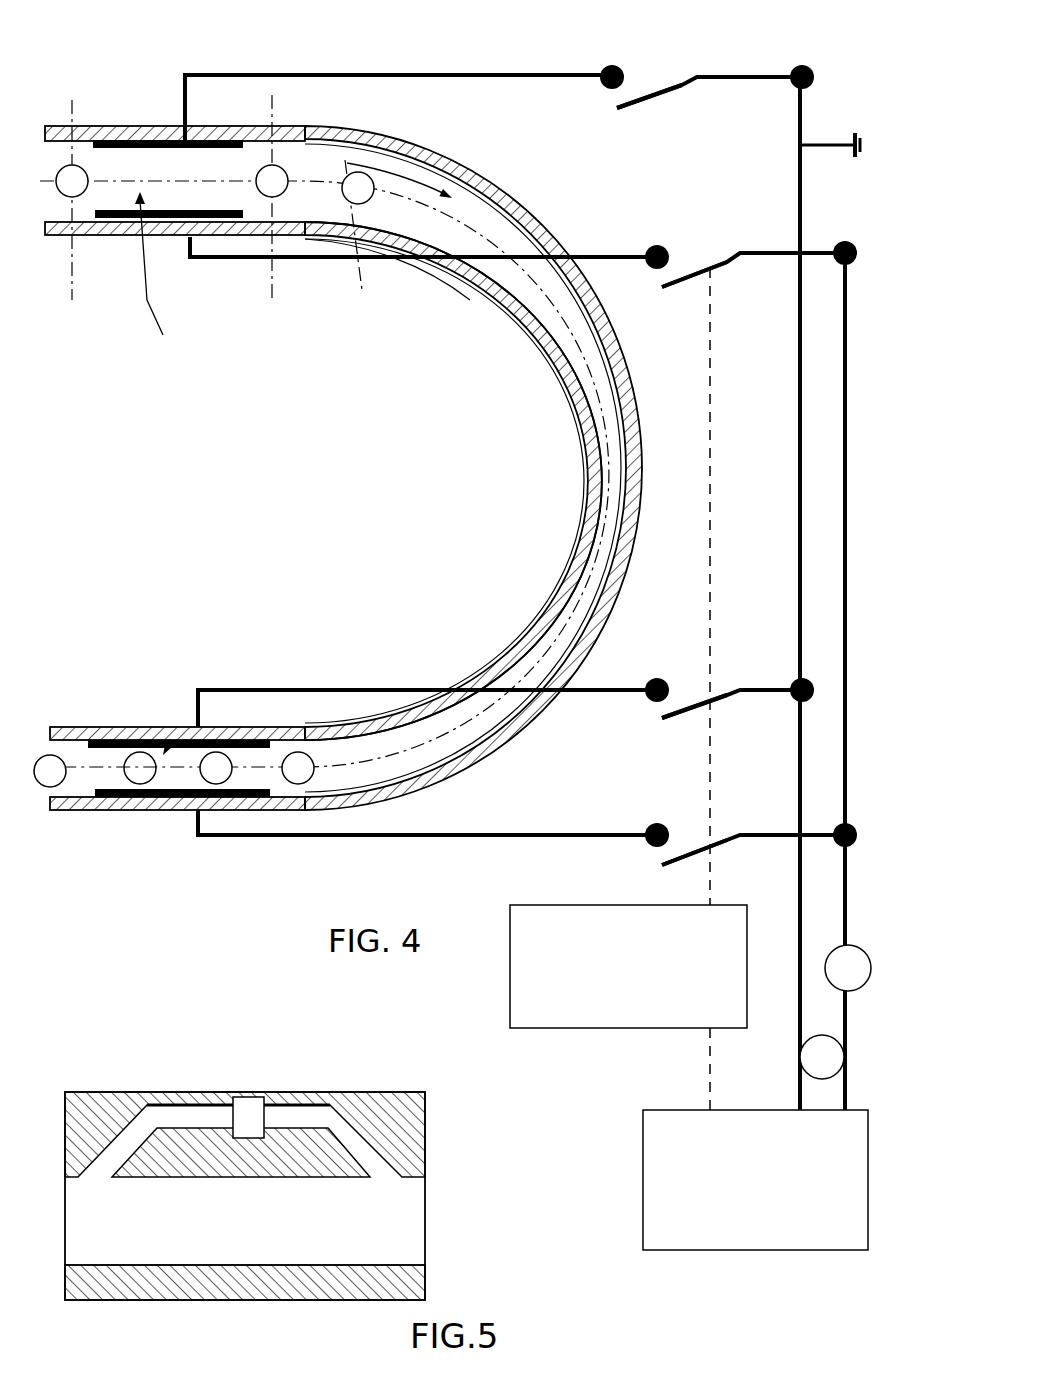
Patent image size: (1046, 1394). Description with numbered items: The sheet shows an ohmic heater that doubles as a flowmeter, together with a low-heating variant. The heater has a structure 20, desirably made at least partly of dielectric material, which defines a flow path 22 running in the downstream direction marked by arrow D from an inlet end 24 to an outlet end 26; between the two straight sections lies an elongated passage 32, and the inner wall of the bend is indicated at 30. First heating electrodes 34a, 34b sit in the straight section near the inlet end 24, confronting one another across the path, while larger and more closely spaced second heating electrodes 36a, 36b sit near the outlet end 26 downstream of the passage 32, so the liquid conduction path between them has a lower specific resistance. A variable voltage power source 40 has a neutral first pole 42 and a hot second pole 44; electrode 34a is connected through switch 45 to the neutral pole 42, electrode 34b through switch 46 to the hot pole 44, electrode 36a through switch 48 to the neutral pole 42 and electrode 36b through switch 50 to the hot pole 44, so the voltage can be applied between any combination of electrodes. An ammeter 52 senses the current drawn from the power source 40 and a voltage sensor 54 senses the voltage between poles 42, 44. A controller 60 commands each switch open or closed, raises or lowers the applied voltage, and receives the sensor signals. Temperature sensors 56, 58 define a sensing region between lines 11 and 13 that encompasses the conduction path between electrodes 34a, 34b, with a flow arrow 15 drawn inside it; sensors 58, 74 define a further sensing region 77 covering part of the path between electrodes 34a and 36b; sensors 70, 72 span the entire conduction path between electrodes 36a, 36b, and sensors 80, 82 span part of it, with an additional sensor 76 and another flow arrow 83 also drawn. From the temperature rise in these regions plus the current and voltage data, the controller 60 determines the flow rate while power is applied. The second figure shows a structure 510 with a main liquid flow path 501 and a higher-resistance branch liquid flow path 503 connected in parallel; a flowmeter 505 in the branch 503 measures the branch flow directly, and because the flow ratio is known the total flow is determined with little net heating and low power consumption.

In FIG. 4, the structure 20 is at (453, 148).
In FIG. 4, the flow path 22 is at (310, 160).
In FIG. 4, the inlet end 24 is at (52, 128).
In FIG. 4, the outlet end 26 is at (57, 727).
In FIG. 4, the line 11 is at (64, 240).
In FIG. 4, the line 13 is at (263, 280).
In FIG. 4, the flow direction 15 is at (134, 227).
In FIG. 4, the bend inner wall 30 is at (558, 362).
In FIG. 4, the elongated passage 32 is at (548, 326).
In FIG. 4, the electrode 34a is at (145, 140).
In FIG. 4, the electrode 34b is at (190, 235).
In FIG. 4, the electrode 36a is at (170, 735).
In FIG. 4, the electrode 36b is at (147, 800).
In FIG. 4, the variable voltage power source 40 is at (645, 1172).
In FIG. 4, the first pole 42 is at (800, 1028).
In FIG. 4, the second pole 44 is at (850, 1092).
In FIG. 4, the switch 45 is at (683, 84).
In FIG. 4, the switch 46 is at (716, 262).
In FIG. 4, the switch 48 is at (722, 693).
In FIG. 4, the switch 50 is at (727, 840).
In FIG. 4, the ammeter 52 is at (862, 950).
In FIG. 4, the voltage sensor 54 is at (843, 1068).
In FIG. 4, the temperature sensor 56 is at (62, 195).
In FIG. 4, the temperature sensor 58 is at (273, 165).
In FIG. 4, the controller 60 is at (530, 1020).
In FIG. 4, the temperature sensor 70 is at (43, 755).
In FIG. 4, the temperature sensor 72 is at (303, 752).
In FIG. 4, the temperature sensor 74 is at (410, 250).
In FIG. 4, the temperature sensor 76 is at (365, 205).
In FIG. 4, the sensing region 77 is at (360, 297).
In FIG. 4, the temperature sensor 80 is at (223, 780).
In FIG. 4, the temperature sensor 82 is at (127, 780).
In FIG. 4, the flow direction 83 is at (163, 727).
In FIG. 4, the arrow D is at (393, 175).
In FIG. 5, the main liquid flow path 501 is at (265, 1217).
In FIG. 5, the branch liquid flow path 503 is at (178, 1113).
In FIG. 5, the flowmeter 505 is at (258, 1120).
In FIG. 5, the structure 510 is at (200, 1290).